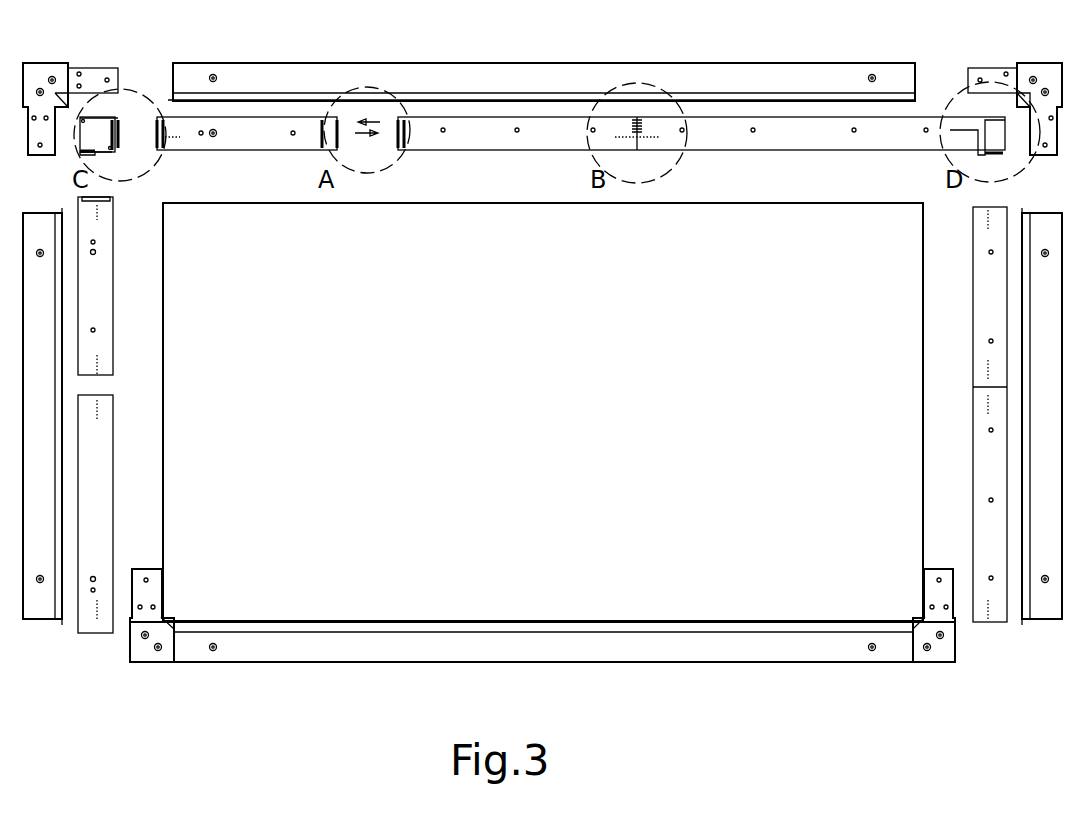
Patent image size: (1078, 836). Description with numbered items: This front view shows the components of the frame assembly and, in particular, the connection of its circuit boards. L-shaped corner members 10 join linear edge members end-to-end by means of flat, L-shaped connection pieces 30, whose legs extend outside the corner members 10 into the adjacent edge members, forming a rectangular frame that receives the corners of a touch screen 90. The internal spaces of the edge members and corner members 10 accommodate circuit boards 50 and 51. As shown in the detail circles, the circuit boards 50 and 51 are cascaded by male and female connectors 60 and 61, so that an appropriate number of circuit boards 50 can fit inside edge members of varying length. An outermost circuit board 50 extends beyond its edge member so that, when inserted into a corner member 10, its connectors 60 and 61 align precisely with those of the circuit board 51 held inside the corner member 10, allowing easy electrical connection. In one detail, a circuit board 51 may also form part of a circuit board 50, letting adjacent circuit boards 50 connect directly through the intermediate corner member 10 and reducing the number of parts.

The corner member 10 is at (35, 68).
The connection piece 30 is at (83, 70).
The circuit board 50 is at (245, 170).
The circuit board 51 is at (112, 152).
The male connector 60 is at (115, 118).
The female connector 61 is at (158, 118).
The touch screen 90 is at (166, 379).